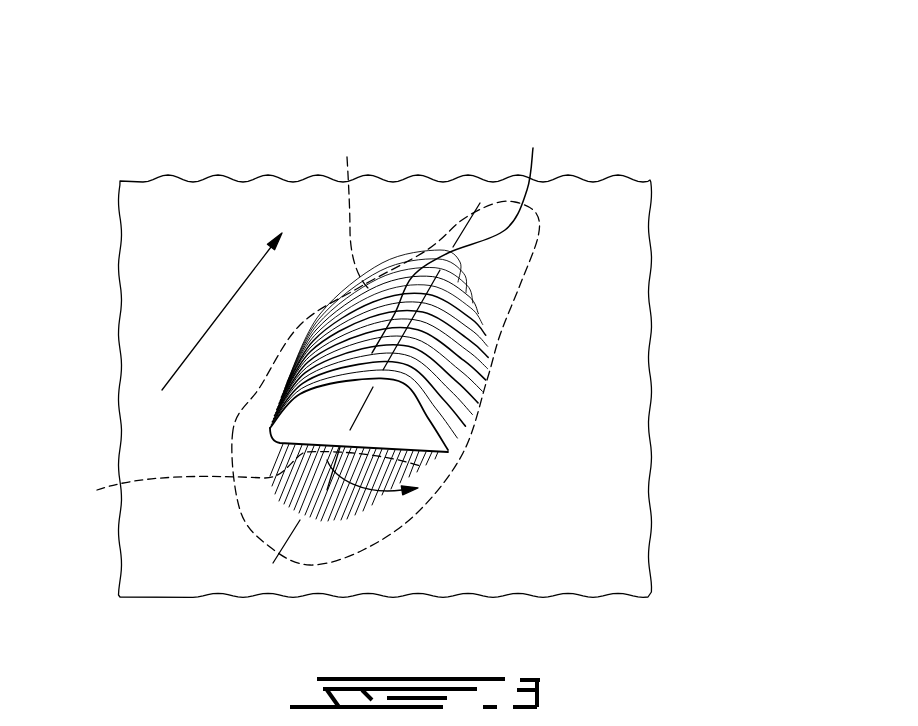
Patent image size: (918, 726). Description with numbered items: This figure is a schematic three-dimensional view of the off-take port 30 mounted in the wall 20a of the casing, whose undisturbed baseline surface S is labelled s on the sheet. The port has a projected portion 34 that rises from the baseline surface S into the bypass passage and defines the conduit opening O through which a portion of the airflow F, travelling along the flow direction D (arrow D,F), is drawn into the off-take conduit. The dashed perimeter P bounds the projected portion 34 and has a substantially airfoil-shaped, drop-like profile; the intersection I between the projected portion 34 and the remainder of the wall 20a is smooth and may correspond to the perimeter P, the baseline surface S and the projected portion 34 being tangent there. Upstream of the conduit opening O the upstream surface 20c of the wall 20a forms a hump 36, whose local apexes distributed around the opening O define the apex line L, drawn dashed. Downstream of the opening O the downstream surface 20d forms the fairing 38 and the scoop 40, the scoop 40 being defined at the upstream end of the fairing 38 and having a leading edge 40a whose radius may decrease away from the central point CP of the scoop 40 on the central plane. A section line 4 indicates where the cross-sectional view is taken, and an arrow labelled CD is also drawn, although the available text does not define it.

The off-take port 30 is at (403, 215).
The projected portion 34 is at (512, 293).
The hump 36 is at (340, 546).
The fairing 38 is at (478, 326).
The scoop 40 is at (456, 393).
The leading edge 40a is at (449, 452).
The wall of the casing 20a is at (613, 450).
The upstream surface 20c is at (263, 510).
The downstream surface 20d is at (503, 260).
The section line 4- 4 is at (487, 207).
The conduit opening O is at (382, 428).
The perimeter P is at (354, 207).
The central point CP is at (462, 236).
The flow direction and airflow D,F is at (213, 320).
The apex line L is at (252, 477).
The chord direction CD is at (390, 495).
The intersection I is at (377, 547).
The baseline surface s is at (609, 552).